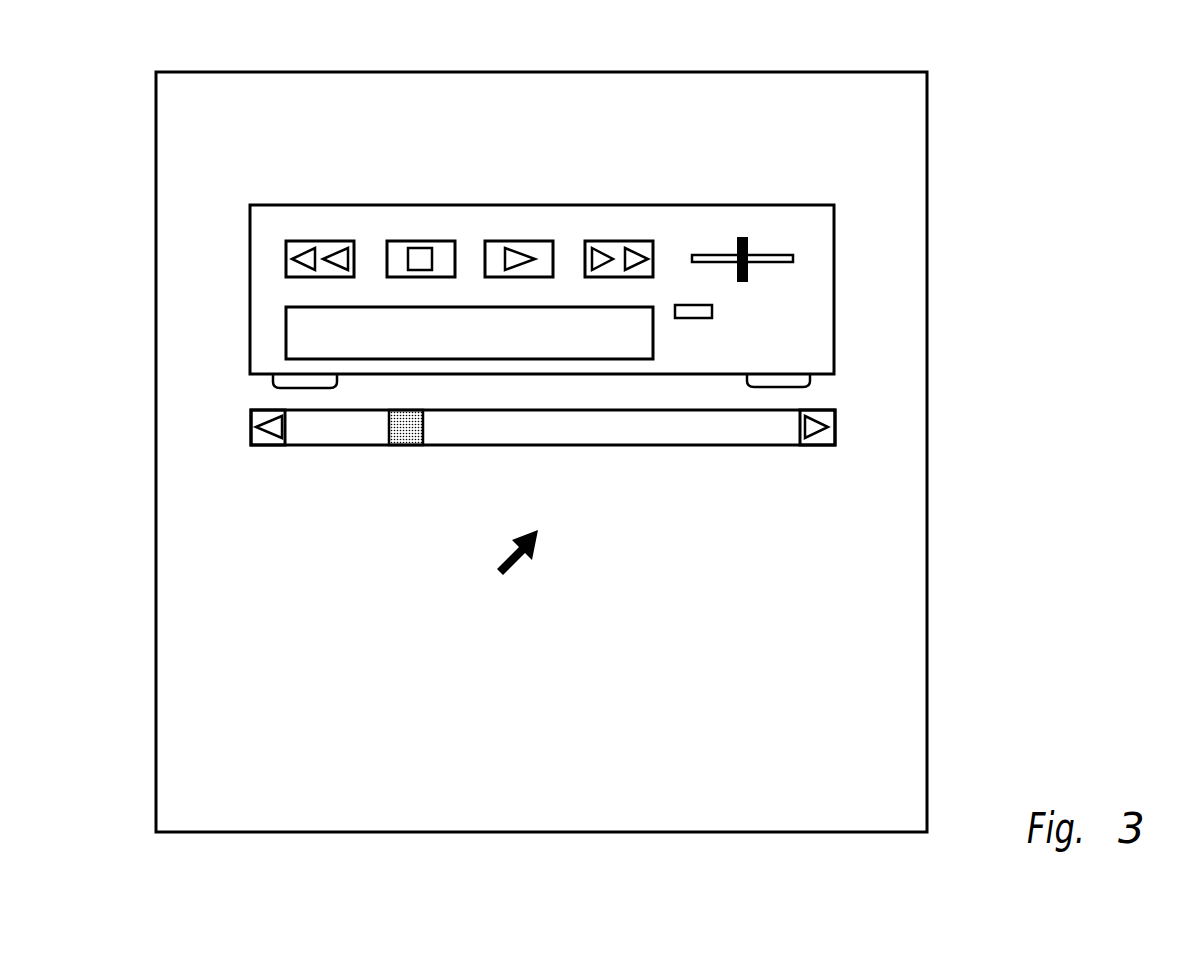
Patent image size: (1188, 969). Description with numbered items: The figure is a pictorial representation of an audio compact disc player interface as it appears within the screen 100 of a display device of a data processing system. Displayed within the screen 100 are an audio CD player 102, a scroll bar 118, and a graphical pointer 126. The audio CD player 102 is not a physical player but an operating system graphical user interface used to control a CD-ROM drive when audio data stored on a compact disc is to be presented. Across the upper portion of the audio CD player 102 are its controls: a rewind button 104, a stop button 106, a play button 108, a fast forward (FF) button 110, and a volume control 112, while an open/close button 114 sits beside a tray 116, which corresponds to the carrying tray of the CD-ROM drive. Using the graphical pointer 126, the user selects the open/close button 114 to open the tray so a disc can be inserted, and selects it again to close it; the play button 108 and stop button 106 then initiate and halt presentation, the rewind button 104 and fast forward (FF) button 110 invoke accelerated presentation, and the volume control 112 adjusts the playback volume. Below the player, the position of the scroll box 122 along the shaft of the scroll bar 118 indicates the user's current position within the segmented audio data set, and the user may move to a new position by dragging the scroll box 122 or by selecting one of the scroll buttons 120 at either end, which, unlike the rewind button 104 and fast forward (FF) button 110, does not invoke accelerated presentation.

The screen 100 is at (744, 53).
The audio CD player 102 is at (600, 205).
The rewind button 104 is at (330, 217).
The stop button 106 is at (430, 217).
The play button 108 is at (529, 217).
The fast forward (FF) button 110 is at (628, 216).
The volume control 112 is at (776, 228).
The open/close button 114 is at (712, 311).
The tray 116 is at (617, 360).
The scroll bar 118 is at (826, 442).
The scroll buttons 120 is at (265, 441).
The scroll box 122 is at (425, 436).
The graphical pointer 126 is at (539, 536).